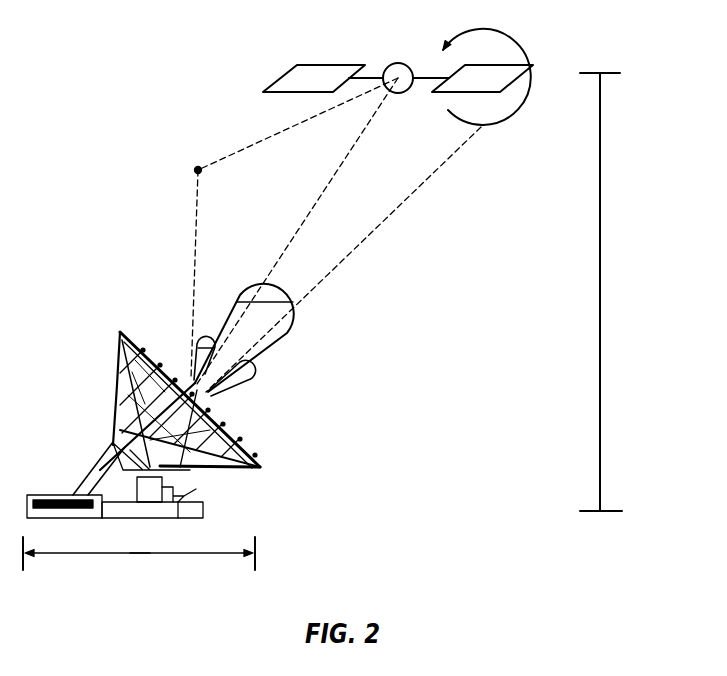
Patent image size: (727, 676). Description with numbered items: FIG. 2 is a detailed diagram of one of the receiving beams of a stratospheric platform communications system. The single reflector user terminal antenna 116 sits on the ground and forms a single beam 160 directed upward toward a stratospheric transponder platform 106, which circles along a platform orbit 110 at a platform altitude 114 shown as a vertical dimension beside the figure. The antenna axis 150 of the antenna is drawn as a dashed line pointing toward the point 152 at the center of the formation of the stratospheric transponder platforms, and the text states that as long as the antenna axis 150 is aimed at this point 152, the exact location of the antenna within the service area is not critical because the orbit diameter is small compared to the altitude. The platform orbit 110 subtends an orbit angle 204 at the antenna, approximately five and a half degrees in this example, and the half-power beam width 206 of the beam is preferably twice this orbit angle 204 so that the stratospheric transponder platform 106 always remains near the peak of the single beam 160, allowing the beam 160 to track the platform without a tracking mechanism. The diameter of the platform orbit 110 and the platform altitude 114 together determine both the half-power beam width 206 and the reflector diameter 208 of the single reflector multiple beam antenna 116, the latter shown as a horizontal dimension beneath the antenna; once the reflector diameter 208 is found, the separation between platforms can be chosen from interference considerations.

The stratospheric transponder platform 106 is at (325, 65).
The platform orbit 110 is at (508, 36).
The platform altitude 114 is at (600, 167).
The single reflector user terminal antenna 116 is at (120, 332).
The antenna axis 150 is at (193, 198).
The point at the center of the formation 152 is at (198, 170).
The receiving beam 160 is at (255, 365).
The orbit angle 204 is at (305, 213).
The half-power beam width 206 is at (238, 295).
The reflector diameter 208 is at (143, 553).